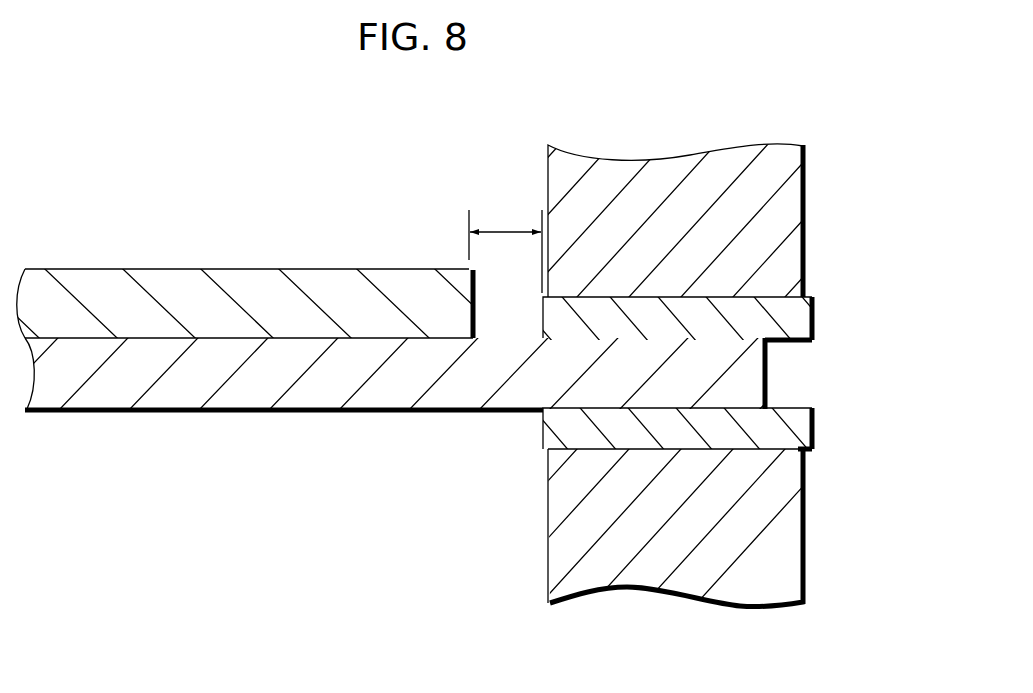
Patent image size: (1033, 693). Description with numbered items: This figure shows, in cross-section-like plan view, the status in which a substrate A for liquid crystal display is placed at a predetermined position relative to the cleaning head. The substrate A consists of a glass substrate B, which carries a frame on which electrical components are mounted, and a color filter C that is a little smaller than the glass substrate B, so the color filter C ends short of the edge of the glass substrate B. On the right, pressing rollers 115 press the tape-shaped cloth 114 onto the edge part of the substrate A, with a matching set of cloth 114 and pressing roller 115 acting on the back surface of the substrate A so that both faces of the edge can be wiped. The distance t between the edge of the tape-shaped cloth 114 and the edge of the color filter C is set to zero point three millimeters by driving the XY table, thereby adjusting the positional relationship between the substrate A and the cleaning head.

The substrate A is at (423, 320).
The glass substrate B is at (205, 390).
The color filter C is at (190, 283).
The tape-shaped cloth 114 is at (800, 318).
The pressing roller 115 is at (778, 220).
The distance t is at (505, 247).